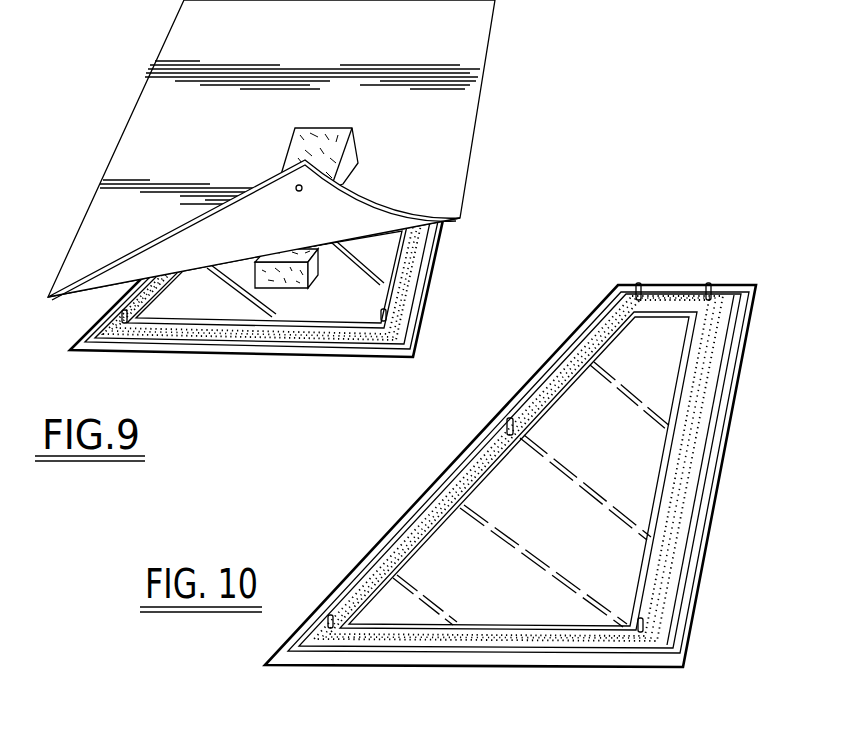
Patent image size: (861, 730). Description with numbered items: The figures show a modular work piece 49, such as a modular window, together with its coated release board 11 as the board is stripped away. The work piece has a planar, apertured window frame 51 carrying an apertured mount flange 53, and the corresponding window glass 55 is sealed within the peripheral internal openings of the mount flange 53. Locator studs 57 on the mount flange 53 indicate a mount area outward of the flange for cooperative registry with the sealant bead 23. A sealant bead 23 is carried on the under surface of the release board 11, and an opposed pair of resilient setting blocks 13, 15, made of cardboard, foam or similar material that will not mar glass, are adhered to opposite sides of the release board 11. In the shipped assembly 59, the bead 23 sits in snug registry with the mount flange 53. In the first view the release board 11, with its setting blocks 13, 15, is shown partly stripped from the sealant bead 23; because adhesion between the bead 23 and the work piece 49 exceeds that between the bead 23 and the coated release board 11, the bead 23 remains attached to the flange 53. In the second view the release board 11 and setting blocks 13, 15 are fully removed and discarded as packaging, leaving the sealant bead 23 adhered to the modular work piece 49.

In FIG. 9, the release board 11 is at (365, 202).
In FIG. 9, the setting block 13 is at (315, 270).
In FIG. 9, the setting block 15 is at (352, 148).
In FIG. 9, the sealant bead 23 is at (398, 268).
In FIG. 10, the sealant bead 23 is at (678, 507).
In FIG. 9, the work piece 49 is at (88, 328).
In FIG. 10, the work piece 49 is at (408, 505).
In FIG. 9, the window frame 51 is at (110, 355).
In FIG. 10, the window frame 51 is at (723, 457).
In FIG. 9, the mount flange 53 is at (332, 343).
In FIG. 10, the mount flange 53 is at (713, 400).
In FIG. 9, the window glass 55 is at (199, 307).
In FIG. 10, the window glass 55 is at (548, 618).
In FIG. 9, the locator stud 57 is at (441, 40).
In FIG. 10, the locator stud 57 is at (708, 283).
In FIG. 9, the assembly 59 is at (482, 127).